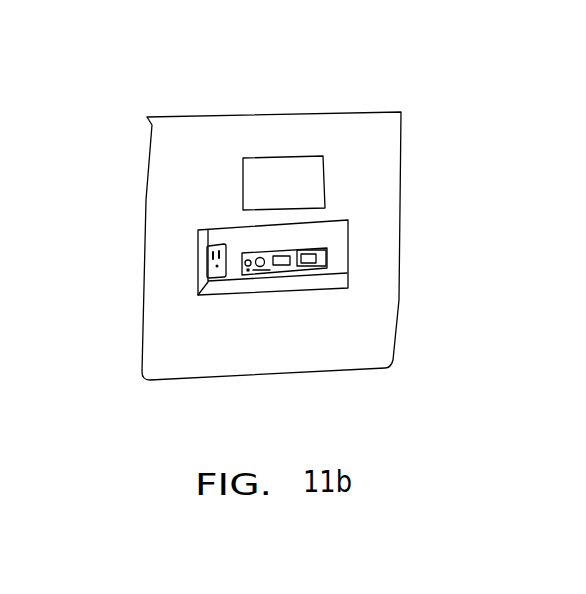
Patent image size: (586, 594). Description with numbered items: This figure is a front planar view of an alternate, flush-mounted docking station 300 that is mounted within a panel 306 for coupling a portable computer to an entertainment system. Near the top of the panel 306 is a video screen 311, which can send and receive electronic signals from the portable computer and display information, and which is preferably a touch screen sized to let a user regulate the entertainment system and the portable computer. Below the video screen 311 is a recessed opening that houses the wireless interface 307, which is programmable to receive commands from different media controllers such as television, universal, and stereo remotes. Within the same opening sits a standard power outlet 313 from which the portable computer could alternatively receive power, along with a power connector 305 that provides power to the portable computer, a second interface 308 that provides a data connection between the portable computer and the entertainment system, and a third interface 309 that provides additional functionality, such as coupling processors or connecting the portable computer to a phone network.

The docking station 300 is at (188, 88).
The panel 306 is at (392, 167).
The video screen 311 is at (285, 168).
The wireless interface 307 is at (313, 258).
The power outlet 313 is at (205, 262).
The power connector 305 is at (262, 268).
The second interface 308 is at (248, 277).
The third interface 309 is at (283, 263).